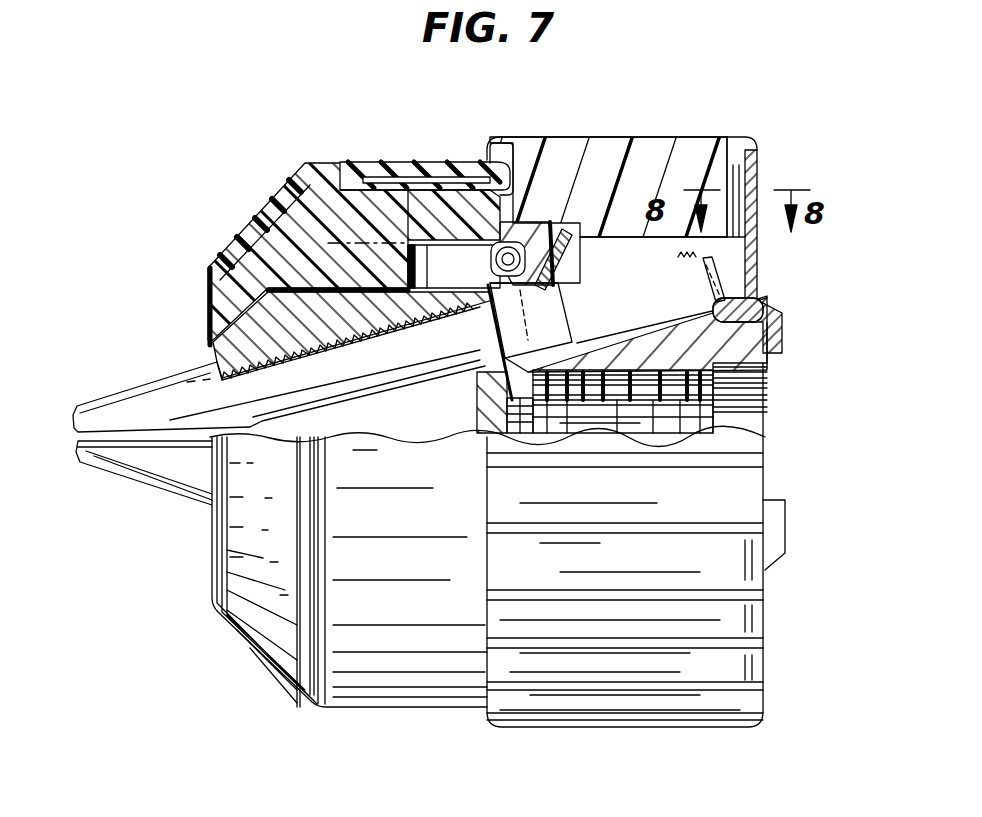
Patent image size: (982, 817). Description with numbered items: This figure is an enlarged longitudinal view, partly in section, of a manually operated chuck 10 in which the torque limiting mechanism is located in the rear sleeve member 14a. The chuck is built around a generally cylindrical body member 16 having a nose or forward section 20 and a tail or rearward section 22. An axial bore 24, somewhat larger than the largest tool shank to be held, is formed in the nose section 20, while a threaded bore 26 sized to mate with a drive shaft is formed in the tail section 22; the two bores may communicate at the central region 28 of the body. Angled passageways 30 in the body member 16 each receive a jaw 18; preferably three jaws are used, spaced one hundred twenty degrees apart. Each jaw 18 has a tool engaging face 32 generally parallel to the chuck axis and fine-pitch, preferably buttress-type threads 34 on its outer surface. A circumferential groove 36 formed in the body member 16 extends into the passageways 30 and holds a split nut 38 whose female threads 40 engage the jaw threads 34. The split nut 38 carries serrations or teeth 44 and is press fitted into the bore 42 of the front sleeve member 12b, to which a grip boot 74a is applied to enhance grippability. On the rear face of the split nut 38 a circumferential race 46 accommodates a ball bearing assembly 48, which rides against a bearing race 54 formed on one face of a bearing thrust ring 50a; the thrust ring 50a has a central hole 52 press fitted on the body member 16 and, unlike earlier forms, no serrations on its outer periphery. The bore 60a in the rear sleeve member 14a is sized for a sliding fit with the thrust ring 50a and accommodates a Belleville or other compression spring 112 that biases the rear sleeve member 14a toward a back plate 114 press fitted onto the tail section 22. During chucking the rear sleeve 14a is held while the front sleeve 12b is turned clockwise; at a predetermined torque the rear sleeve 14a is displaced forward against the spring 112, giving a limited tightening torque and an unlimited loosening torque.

The clamping tool 10 is at (348, 722).
The front sleeve member 12b is at (363, 165).
The rear sleeve member 14a is at (698, 137).
The body member 16 is at (210, 270).
The jaws 18 is at (137, 387).
The nose section 20 is at (217, 343).
The tail section 22 is at (770, 357).
The axial bore 24 is at (480, 372).
The threaded bore 26 is at (680, 385).
The central region 28 is at (521, 440).
The passageways 30 is at (320, 355).
The tool engaging face 32 is at (82, 455).
The threads 34 is at (260, 299).
The circumferential groove 36 is at (528, 318).
The split nut 38 is at (470, 240).
The female threads 40 is at (560, 334).
The bore 42 is at (454, 266).
The serrations or teeth 44 is at (455, 235).
The circumferential race 46 is at (490, 270).
The ball bearing assembly 48 is at (500, 242).
The bearing thrust ring 50a is at (585, 296).
The central hole 52 is at (575, 303).
The bearing race 54 is at (508, 240).
The bore 60a is at (537, 222).
The grip boot 74a is at (270, 197).
The compression spring 112 is at (573, 259).
The back plate 114 is at (762, 266).